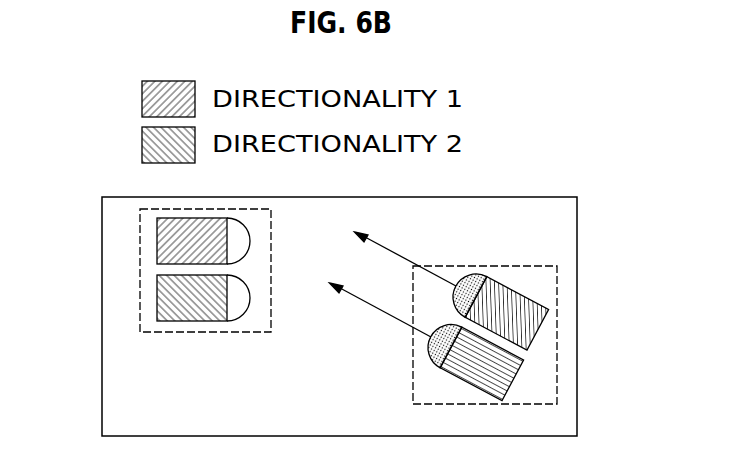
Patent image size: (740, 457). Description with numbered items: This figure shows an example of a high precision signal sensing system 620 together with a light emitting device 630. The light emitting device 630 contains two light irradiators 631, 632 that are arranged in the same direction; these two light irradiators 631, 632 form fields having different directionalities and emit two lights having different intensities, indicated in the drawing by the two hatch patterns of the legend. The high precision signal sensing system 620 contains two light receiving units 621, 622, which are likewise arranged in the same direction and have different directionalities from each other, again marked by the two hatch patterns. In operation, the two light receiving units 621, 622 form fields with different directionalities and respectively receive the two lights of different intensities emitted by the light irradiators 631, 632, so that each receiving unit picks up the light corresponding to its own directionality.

The high precision signal sensing system 620 is at (205, 333).
The light receiving unit 621 is at (157, 238).
The light receiving unit 622 is at (157, 294).
The light emitting device 630 is at (463, 266).
The light irradiator 631 is at (533, 331).
The light irradiator 632 is at (510, 387).